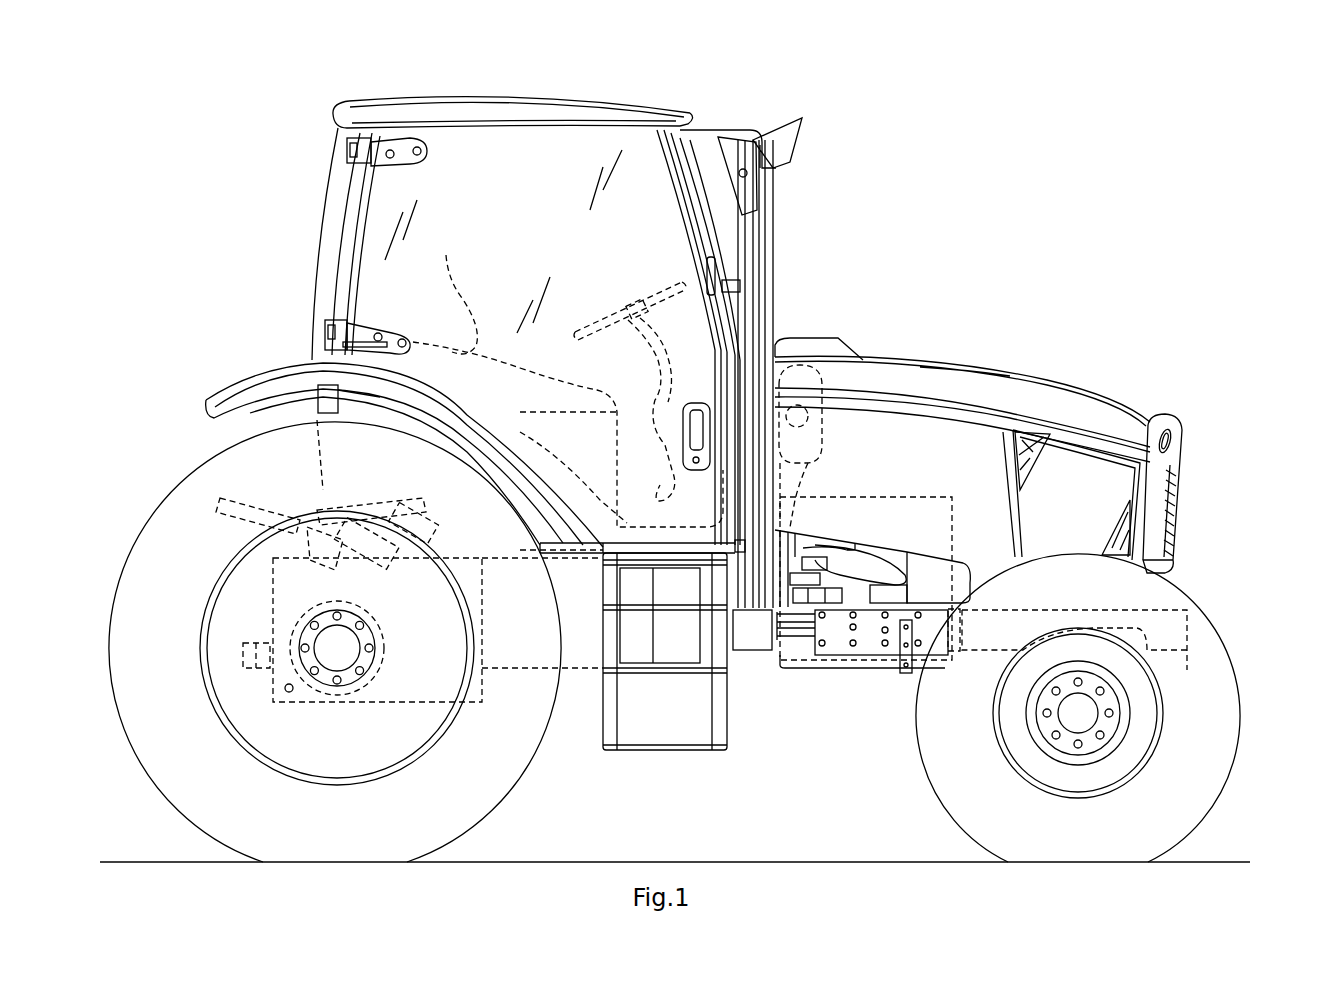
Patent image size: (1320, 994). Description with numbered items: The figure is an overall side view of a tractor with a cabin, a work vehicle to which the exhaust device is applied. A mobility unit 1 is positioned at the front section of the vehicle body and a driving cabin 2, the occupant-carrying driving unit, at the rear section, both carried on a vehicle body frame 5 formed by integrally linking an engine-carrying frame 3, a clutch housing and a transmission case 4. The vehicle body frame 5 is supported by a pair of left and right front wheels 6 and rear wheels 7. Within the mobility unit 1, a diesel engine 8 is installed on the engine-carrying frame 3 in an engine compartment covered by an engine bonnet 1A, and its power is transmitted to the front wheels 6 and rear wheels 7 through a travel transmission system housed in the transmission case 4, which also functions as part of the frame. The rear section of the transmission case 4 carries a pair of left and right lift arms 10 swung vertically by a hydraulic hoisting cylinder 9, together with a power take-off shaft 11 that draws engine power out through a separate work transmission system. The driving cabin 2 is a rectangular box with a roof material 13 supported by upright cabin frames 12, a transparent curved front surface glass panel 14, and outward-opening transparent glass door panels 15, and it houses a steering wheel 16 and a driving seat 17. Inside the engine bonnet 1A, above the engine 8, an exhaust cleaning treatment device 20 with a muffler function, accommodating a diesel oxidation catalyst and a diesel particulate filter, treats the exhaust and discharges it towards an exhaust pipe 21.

The mobility unit 1 is at (1055, 345).
The engine bonnet 1A is at (896, 387).
The driving cabin 2 is at (303, 133).
The engine-carrying frame 3 is at (778, 657).
The transmission case 4 is at (393, 703).
The vehicle body frame 5 is at (578, 690).
The front wheels 6 is at (1230, 652).
The rear wheels 7 is at (153, 512).
The engine 8 is at (900, 497).
The hydraulic hoisting cylinder 9 is at (432, 520).
The lift arms 10 is at (258, 500).
The power take-off shaft 11 is at (253, 640).
The cabin frames 12 is at (345, 246).
The roof material 13 is at (403, 112).
The front surface glass panel 14 is at (730, 225).
The door panels 15 is at (530, 218).
The steering wheel 16 is at (622, 293).
The driving seat 17 is at (568, 378).
The exhaust cleaning treatment device 20 is at (840, 440).
The exhaust pipe 21 is at (803, 114).